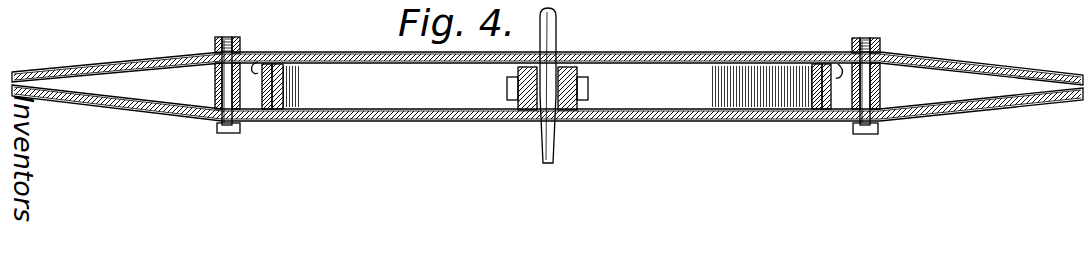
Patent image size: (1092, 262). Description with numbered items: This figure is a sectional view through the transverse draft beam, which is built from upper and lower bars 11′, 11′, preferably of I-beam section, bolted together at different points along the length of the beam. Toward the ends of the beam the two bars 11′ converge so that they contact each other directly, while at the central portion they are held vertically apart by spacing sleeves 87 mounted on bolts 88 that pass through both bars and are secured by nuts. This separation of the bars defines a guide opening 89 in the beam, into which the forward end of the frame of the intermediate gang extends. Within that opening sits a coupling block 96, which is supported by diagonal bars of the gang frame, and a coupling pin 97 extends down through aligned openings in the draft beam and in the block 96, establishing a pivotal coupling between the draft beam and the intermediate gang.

The upper and lower bars 11′ is at (325, 60).
The spacing sleeve 87 is at (215, 80).
The bolt 88 is at (218, 131).
The guide opening 89 is at (254, 62).
The coupling block 96 is at (535, 103).
The coupling pin 97 is at (549, 50).